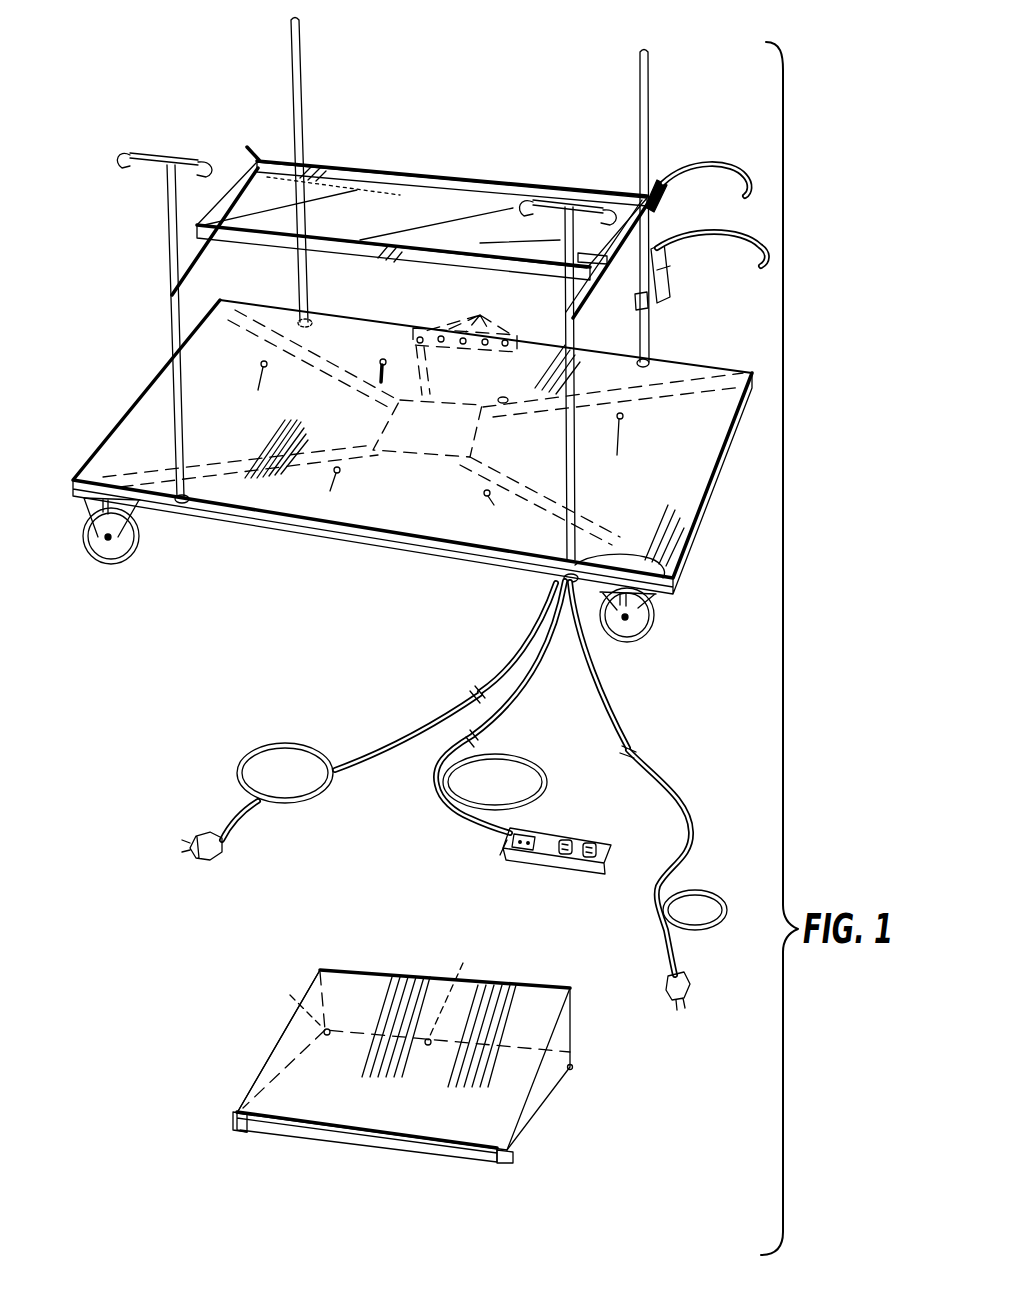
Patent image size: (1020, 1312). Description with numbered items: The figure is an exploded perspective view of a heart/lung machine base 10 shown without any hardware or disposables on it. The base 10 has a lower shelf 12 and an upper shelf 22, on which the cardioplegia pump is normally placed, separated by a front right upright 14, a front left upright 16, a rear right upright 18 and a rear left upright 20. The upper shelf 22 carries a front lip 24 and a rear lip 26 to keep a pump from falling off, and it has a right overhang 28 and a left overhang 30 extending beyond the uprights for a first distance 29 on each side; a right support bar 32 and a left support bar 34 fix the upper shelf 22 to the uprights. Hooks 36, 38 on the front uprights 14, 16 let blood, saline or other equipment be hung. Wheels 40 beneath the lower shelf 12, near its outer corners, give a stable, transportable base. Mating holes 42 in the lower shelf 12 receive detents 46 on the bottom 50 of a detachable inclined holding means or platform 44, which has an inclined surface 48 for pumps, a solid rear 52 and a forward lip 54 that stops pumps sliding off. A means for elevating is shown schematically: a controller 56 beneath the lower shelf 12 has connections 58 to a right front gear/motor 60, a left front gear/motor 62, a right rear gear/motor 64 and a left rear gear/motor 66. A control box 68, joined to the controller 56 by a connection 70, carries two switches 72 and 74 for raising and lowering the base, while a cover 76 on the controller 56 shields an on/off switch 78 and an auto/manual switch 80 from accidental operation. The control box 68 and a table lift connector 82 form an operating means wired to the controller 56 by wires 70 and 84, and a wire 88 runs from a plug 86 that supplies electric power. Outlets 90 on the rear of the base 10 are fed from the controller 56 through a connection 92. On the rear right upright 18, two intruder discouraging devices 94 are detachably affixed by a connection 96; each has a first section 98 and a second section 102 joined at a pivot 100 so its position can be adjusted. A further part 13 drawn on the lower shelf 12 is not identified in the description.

The heart/lung machine base 10 is at (204, 122).
The lower shelf 12 is at (690, 483).
The cord retainer 13 is at (634, 556).
The front right upright 14 is at (586, 316).
The front left upright 16 is at (168, 326).
The rear right upright 18 is at (650, 117).
The rear left upright 20 is at (300, 112).
The upper shelf 22 is at (428, 205).
The front lip 24 is at (374, 264).
The rear lip 26 is at (382, 172).
The right overhang 28 is at (668, 248).
The first distance 29 is at (595, 245).
The left overhang 30 is at (246, 138).
The right support bar 32 is at (571, 301).
The left support bar 34 is at (208, 266).
The hook 36 is at (540, 196).
The hook 38 is at (147, 152).
The wheels 40 is at (82, 527).
The mating holes 42 is at (210, 438).
The inclined holding means 44 is at (548, 1010).
The detents 46 is at (290, 1005).
The inclined surface 48 is at (290, 1085).
The bottom 50 is at (548, 1095).
The rear 52 is at (545, 992).
The lip 54 is at (466, 1160).
The controller 56 is at (433, 463).
The connections 58 is at (320, 437).
The right front gear/motor 60 is at (556, 572).
The left front gear/motor 62 is at (186, 505).
The right rear gear/motor 64 is at (650, 360).
The left rear gear/motor 66 is at (309, 318).
The control box 68 is at (547, 857).
The connection 70 is at (518, 710).
The switch 72 is at (591, 860).
The switch 74 is at (566, 856).
The cover 76 is at (531, 840).
The on/off switch 78 is at (498, 860).
The auto/manual switch 80 is at (520, 870).
The table lift connector 82 is at (692, 977).
The wire 84 is at (668, 782).
The plug 86 is at (212, 855).
The wire 88 is at (360, 770).
The outlets 90 is at (467, 313).
The connection 92 is at (428, 374).
The intruder discouraging devices 94 is at (710, 121).
The connection 96 is at (649, 303).
The first section 98 is at (664, 277).
The pivot 100 is at (668, 193).
The second section 102 is at (688, 167).